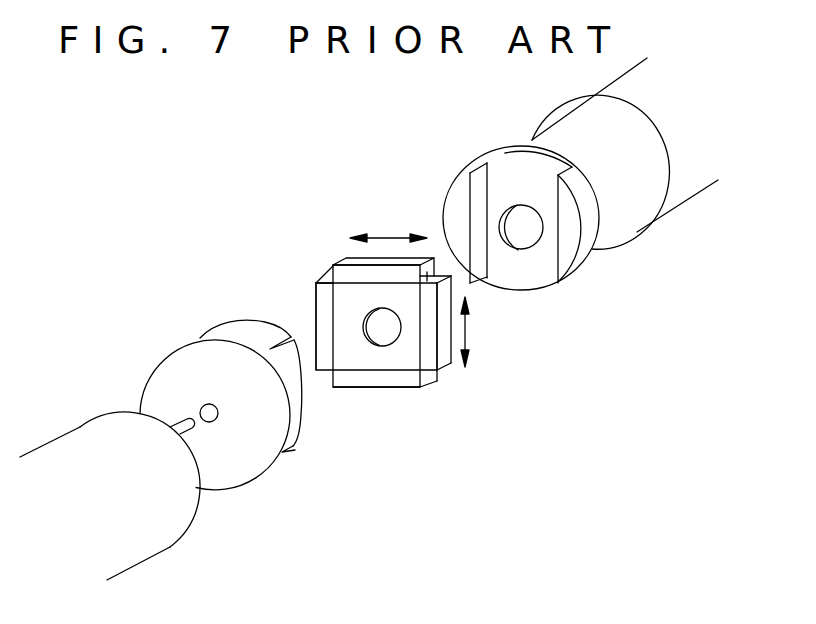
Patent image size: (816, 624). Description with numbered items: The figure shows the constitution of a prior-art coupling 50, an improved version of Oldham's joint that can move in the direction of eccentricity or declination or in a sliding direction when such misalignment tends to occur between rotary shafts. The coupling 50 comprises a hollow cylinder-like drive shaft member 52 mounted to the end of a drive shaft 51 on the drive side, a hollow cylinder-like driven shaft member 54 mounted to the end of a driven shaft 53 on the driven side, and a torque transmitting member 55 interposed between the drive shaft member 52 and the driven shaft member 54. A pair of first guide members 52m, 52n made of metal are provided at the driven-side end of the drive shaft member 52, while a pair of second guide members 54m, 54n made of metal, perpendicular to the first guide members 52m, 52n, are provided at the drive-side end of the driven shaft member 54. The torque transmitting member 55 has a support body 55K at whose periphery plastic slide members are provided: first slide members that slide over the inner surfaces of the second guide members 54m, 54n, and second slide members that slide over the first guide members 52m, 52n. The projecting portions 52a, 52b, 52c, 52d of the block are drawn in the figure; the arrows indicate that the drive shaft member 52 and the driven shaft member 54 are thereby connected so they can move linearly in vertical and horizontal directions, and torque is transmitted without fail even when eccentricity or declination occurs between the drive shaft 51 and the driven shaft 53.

The coupling 50 is at (356, 214).
The drive shaft 51 is at (633, 222).
The drive shaft member 52 is at (517, 198).
The first guide member 52m is at (462, 208).
The first guide member 52n is at (575, 252).
The upper projection of intermediate block 52a is at (360, 263).
The lower projection of intermediate block 52b is at (377, 380).
The left projection of intermediate block 52c is at (352, 303).
The right projection of intermediate block 52d is at (430, 343).
The driven shaft 53 is at (152, 497).
The driven shaft member 54 is at (255, 415).
The second guide member 54m is at (300, 348).
The second guide member 54n is at (286, 455).
The torque transmitting member 55 is at (353, 341).
The support body 55K is at (324, 292).